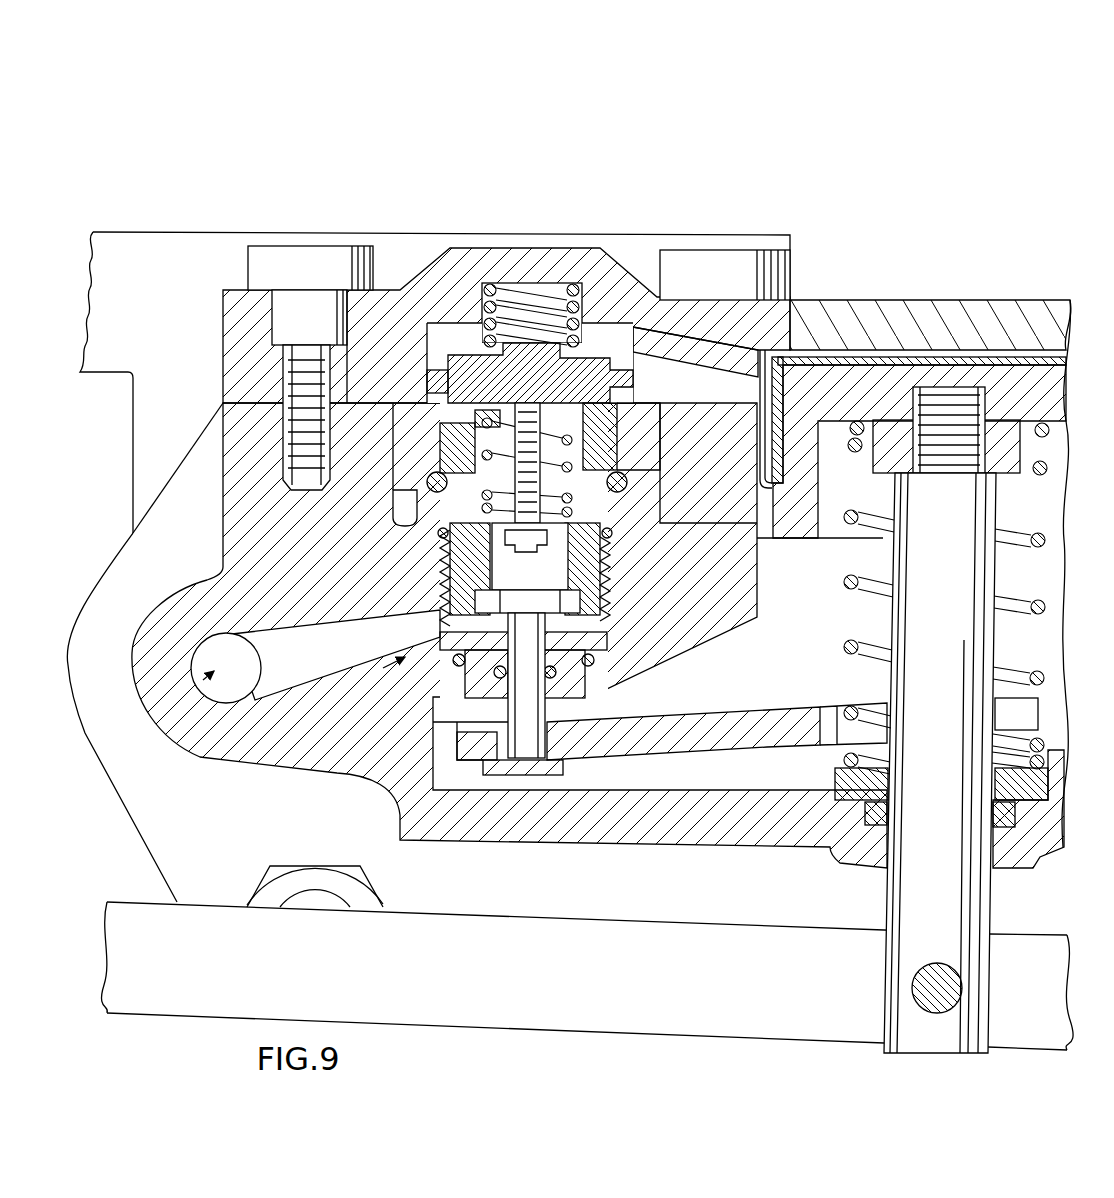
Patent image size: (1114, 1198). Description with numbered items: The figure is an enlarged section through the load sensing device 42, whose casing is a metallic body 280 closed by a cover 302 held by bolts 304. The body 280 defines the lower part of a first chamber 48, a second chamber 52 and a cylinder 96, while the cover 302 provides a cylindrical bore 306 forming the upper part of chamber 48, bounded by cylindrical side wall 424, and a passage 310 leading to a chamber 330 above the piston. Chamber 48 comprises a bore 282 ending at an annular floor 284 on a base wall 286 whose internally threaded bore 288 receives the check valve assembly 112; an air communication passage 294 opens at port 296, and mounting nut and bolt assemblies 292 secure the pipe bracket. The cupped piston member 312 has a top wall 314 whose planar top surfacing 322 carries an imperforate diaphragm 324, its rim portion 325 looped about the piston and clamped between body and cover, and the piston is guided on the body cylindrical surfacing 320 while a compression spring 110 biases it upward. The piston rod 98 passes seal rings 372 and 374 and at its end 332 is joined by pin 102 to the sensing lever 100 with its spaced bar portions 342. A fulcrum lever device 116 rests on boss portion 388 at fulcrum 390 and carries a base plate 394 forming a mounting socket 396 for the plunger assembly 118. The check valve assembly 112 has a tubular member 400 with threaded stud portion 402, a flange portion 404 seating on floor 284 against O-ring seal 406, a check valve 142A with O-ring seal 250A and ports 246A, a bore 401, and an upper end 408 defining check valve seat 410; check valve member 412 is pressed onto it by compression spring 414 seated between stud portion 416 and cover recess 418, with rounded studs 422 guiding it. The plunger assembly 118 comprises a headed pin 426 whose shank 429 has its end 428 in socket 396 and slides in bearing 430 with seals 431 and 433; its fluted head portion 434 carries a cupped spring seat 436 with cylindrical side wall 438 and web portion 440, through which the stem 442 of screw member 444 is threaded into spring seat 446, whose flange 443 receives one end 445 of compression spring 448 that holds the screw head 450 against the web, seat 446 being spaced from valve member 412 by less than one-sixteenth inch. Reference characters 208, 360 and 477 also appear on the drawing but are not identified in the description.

The load sensing device 42 is at (133, 826).
The first chamber 48 is at (425, 320).
The second chamber 52 is at (150, 733).
The cylinder 96 is at (758, 598).
The piston rod 98 is at (905, 890).
The sensing lever 100 is at (533, 1000).
The pin 102 is at (950, 985).
The compression spring 110 is at (843, 652).
The check valve assembly 112 is at (612, 340).
The fulcrum lever device 116 is at (630, 780).
The plunger assembly 118 is at (280, 735).
The check valve 142A is at (626, 460).
The cavity 208 is at (205, 765).
The laterally spaced openings or ports 246A is at (652, 398).
The O-ring seal 250A is at (440, 482).
The metallic body 280 is at (92, 620).
The bore 282 is at (650, 473).
The annular floor 284 is at (672, 577).
The base wall 286 is at (240, 548).
The internally threaded bore 288 is at (332, 600).
The mounting nut and bolt assemblies 292 is at (247, 868).
The air communication passage 294 is at (290, 478).
The port 296 is at (400, 500).
The cover 302 is at (893, 305).
The bolts 304 is at (303, 246).
The cylindrical bore 306 is at (447, 318).
The passage 310 is at (793, 305).
The piston member 312 is at (1050, 340).
The top wall 314 is at (952, 228).
The body cylindrical surfacing 320 is at (758, 580).
The planar top surfacing 322 is at (848, 357).
The imperforate diaphragm 324 is at (1005, 362).
The rim portion 325 is at (785, 400).
The chamber 330 is at (965, 366).
The end of piston rod 332 is at (970, 1018).
The bar portions 342 is at (755, 1013).
The housing 360 is at (168, 243).
The elastomeric seal ring 372 is at (808, 838).
The elastomeric seal ring 374 is at (822, 870).
The boss portion 388 is at (748, 843).
The fulcrum 390 is at (655, 800).
The base plate 394 is at (520, 778).
The mounting socket 396 is at (472, 795).
The tubular member 400 is at (650, 592).
The bore 401 is at (440, 583).
The threaded stud portion 402 is at (387, 568).
The flange portion 404 is at (293, 515).
The O-ring seal 406 is at (392, 522).
The upper end 408 is at (660, 340).
The check valve seat 410 is at (690, 305).
The check valve member 412 is at (593, 330).
The compression spring 414 is at (520, 335).
The stud portion 416 is at (500, 305).
The recess 418 is at (520, 303).
The movement guiding studs 422 is at (353, 352).
The cylindrical side wall 424 is at (350, 298).
The headed pin 426 is at (385, 797).
The end of shank 428 is at (605, 700).
The shank 429 is at (612, 650).
The bearing 430 is at (425, 737).
The seal 431 is at (422, 693).
The seal 433 is at (360, 737).
The head portion 434 is at (398, 651).
The cupped spring seat 436 is at (600, 580).
The cylindrical side wall 438 is at (655, 530).
The web portion 440 is at (662, 507).
The stem 442 is at (462, 452).
The flange 443 is at (440, 352).
The screw member 444 is at (521, 470).
The end of compression spring 445 is at (475, 440).
The spring seat 446 is at (540, 373).
The compression spring 448 is at (457, 379).
The head of screw member 450 is at (548, 556).
The o-ring 477 is at (622, 497).